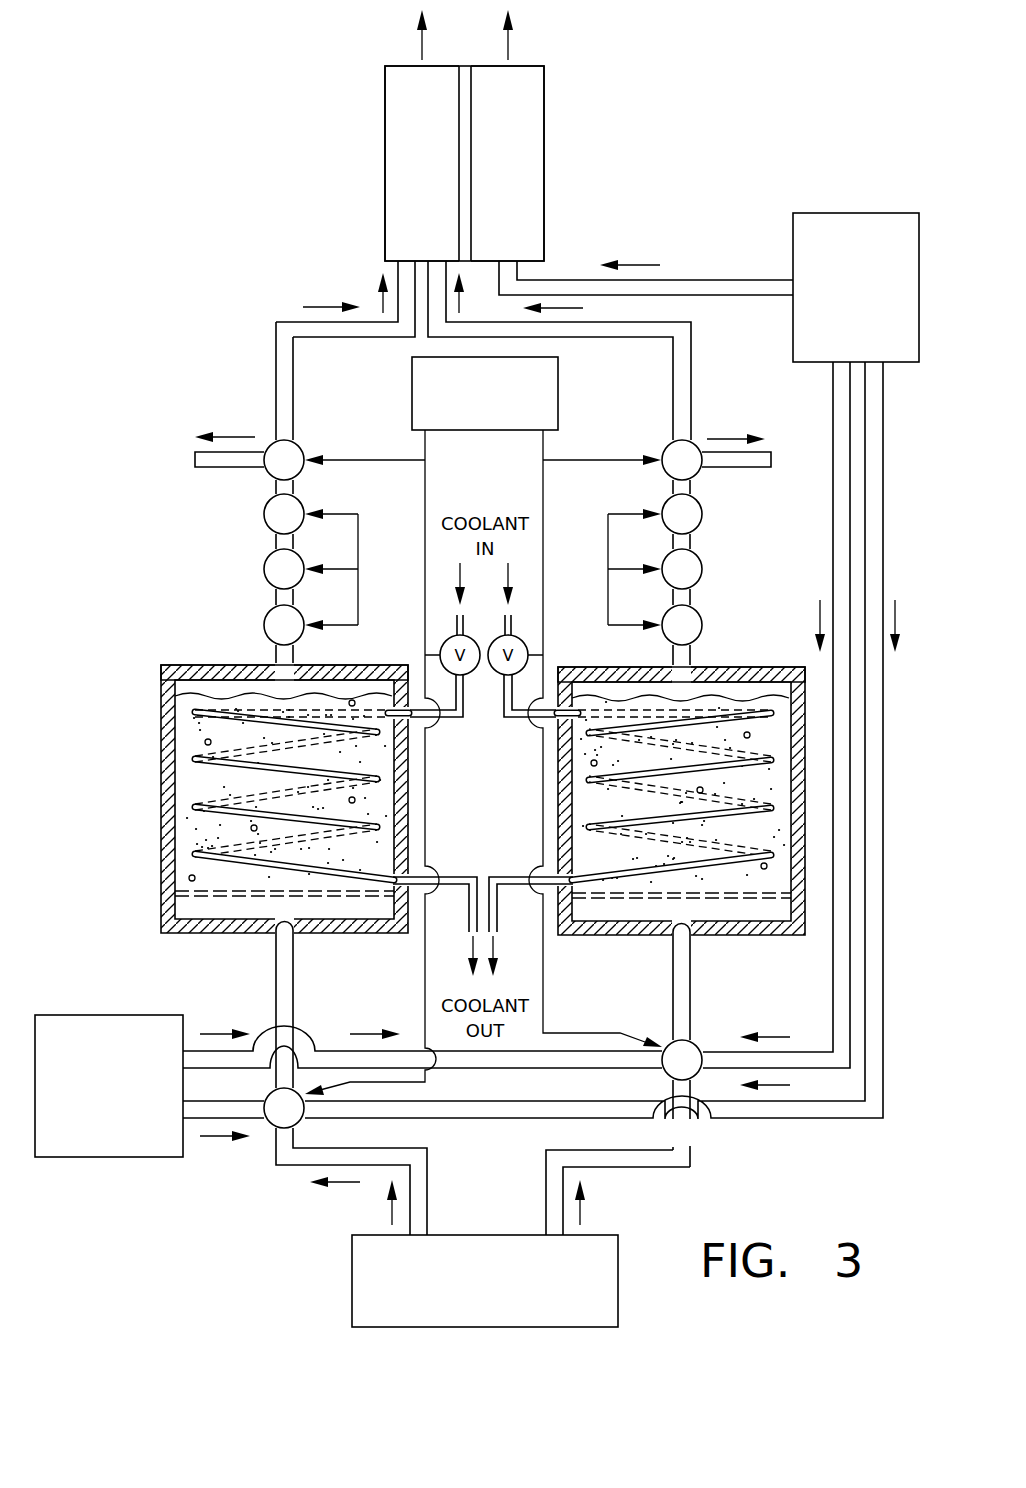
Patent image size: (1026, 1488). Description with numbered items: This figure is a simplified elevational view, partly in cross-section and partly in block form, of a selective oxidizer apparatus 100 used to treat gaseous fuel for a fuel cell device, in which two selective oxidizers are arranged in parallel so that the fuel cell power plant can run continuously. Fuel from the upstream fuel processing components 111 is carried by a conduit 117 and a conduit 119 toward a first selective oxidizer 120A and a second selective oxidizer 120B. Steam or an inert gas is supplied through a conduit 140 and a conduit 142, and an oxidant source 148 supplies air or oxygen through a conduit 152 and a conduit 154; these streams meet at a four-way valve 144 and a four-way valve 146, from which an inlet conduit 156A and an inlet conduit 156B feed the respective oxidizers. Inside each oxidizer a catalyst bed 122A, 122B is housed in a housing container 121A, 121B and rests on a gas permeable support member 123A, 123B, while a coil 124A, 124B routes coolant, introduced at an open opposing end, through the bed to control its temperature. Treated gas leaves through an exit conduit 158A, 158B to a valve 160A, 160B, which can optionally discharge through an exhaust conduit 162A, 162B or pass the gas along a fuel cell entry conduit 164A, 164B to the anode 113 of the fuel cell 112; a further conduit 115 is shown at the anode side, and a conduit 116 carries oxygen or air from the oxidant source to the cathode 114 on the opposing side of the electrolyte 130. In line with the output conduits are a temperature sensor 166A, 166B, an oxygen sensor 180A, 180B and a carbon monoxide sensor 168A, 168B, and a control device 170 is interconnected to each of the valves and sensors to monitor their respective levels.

The apparatus 100 is at (215, 340).
The fuel processing components 111 is at (352, 1255).
The fuel cell 112 is at (560, 150).
The anode 113 is at (403, 125).
The cathode 114 is at (503, 190).
The anode exhaust conduit 115 is at (370, 322).
The oxidant supply conduit 116 is at (670, 282).
The conduit 117 is at (427, 1205).
The conduit 119 is at (546, 1158).
The first selective oxidizer 120A is at (145, 832).
The second selective oxidizer 120B is at (818, 884).
The housing container 121A is at (305, 668).
The housing container 121B is at (568, 670).
The catalyst bed 122A is at (205, 740).
The catalyst bed 122B is at (615, 763).
The gas permeable support member 123A is at (193, 893).
The gas permeable support member 123B is at (733, 890).
The coil 124A is at (200, 853).
The coil 124B is at (637, 880).
The electrolyte 130 is at (468, 113).
The conduit 140 is at (195, 1118).
The conduit 142 is at (193, 1050).
The four-way valve 144 is at (272, 1125).
The four-way valve 146 is at (695, 1042).
The oxidant source 148 is at (815, 213).
The conduit 152 is at (881, 383).
The conduit 154 is at (833, 385).
The inlet conduit 156A is at (293, 960).
The inlet conduit 156B is at (678, 975).
The exit conduit 158A is at (282, 542).
The exit conduit 158B is at (700, 578).
The valve 160A is at (298, 445).
The valve 160B is at (700, 447).
The exhaust conduit 162A is at (194, 455).
The exhaust conduit 162B is at (718, 470).
The fuel cell entry conduit 164A is at (403, 340).
The fuel cell entry conduit 164B is at (565, 343).
The temperature sensor 166A is at (268, 620).
The temperature sensor 166B is at (705, 640).
The carbon monoxide sensor 168A is at (268, 565).
The carbon monoxide sensor 168B is at (702, 600).
The control device 170 is at (558, 390).
The oxygen sensor 180A is at (262, 500).
The oxygen sensor 180B is at (718, 525).